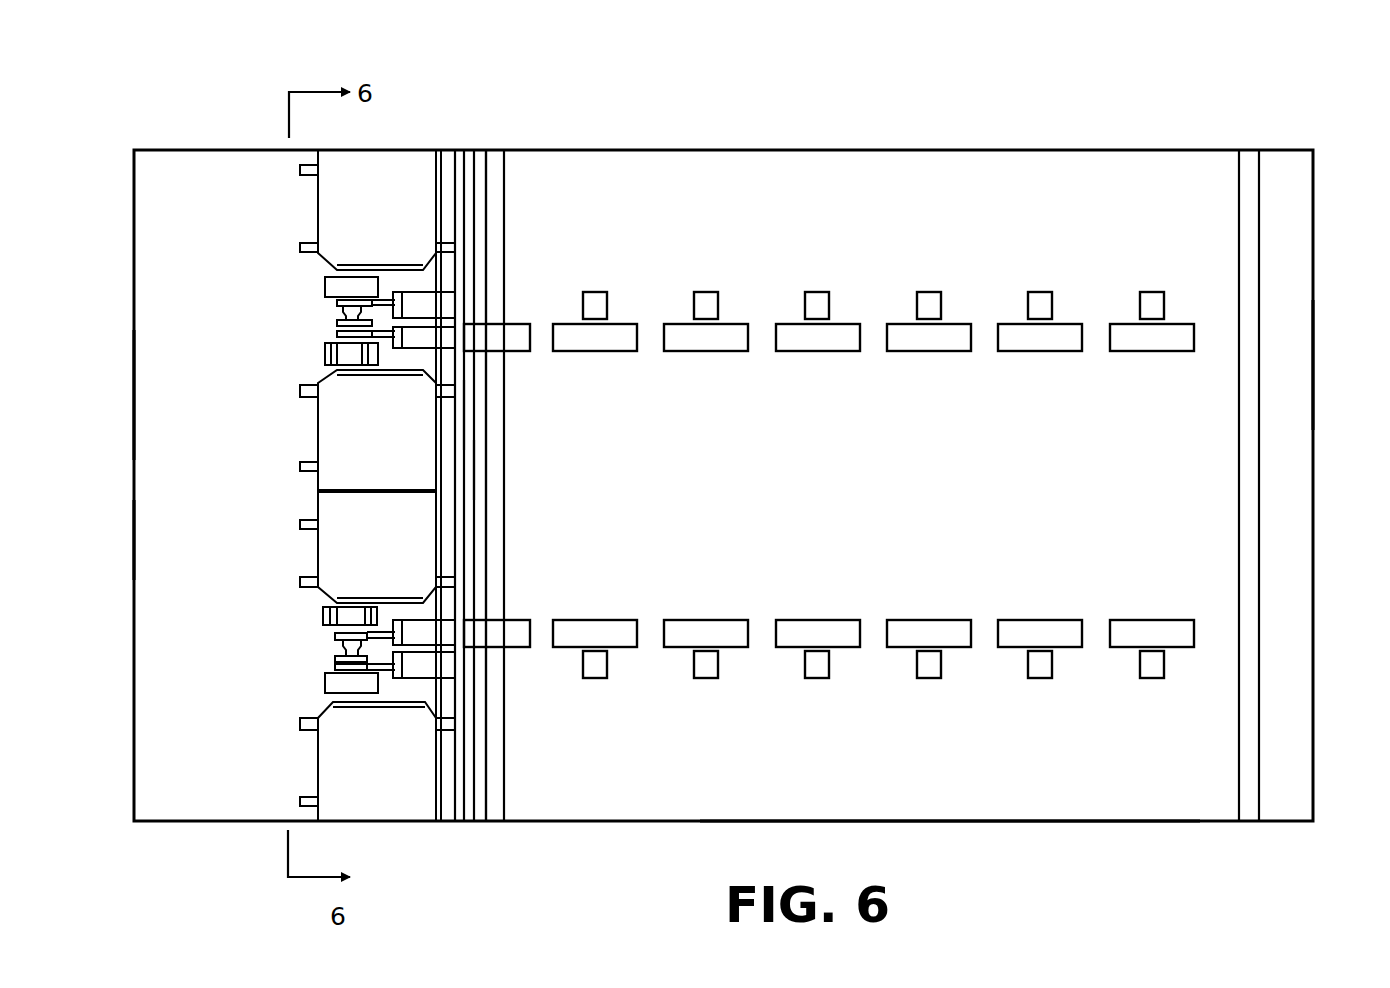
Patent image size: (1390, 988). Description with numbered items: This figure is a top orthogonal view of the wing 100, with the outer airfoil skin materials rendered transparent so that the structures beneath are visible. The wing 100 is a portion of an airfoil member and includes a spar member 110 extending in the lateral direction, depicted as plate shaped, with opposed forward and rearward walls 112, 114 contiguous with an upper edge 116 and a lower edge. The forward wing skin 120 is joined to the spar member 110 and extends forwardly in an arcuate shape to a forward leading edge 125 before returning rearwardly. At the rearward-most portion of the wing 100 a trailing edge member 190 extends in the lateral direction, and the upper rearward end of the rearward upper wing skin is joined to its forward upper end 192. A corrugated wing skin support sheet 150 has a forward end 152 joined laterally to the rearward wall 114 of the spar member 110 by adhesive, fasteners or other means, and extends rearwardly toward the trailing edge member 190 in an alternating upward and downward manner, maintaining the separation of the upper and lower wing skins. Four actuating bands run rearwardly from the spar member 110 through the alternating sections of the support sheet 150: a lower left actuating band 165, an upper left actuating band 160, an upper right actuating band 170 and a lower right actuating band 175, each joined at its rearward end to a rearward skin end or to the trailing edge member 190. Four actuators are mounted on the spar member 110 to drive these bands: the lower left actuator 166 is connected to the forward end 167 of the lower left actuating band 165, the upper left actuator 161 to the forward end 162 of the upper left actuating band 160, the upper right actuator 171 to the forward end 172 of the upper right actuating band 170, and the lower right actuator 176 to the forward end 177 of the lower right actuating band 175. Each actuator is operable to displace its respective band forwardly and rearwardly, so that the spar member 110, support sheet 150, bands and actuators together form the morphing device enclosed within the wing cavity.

The wing 100 is at (744, 122).
The spar member 110 is at (460, 148).
The forward wall 112 is at (452, 762).
The rearward wall 114 is at (462, 259).
The upper edge 116 is at (455, 417).
The forward wing skin 120 is at (122, 546).
The forward leading edge 125 is at (133, 402).
The wing skin support sheet 150 is at (990, 805).
The forward end 152 is at (464, 468).
The upper left actuating band 160 is at (708, 351).
The upper left actuator 161 is at (330, 425).
The forward end 162 is at (400, 348).
The lower left actuating band 165 is at (922, 292).
The lower left actuator 166 is at (333, 205).
The forward end 167 is at (403, 322).
The upper right actuating band 170 is at (922, 620).
The upper right actuator 171 is at (335, 548).
The forward end 172 is at (402, 640).
The lower right actuating band 175 is at (705, 678).
The lower right actuator 176 is at (335, 768).
The forward end 177 is at (402, 660).
The trailing edge member 190 is at (1324, 366).
The forward upper end 192 is at (1250, 243).